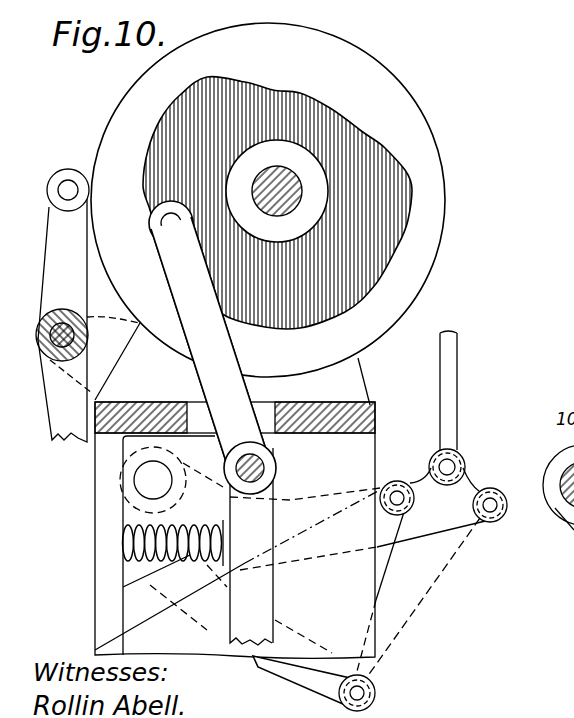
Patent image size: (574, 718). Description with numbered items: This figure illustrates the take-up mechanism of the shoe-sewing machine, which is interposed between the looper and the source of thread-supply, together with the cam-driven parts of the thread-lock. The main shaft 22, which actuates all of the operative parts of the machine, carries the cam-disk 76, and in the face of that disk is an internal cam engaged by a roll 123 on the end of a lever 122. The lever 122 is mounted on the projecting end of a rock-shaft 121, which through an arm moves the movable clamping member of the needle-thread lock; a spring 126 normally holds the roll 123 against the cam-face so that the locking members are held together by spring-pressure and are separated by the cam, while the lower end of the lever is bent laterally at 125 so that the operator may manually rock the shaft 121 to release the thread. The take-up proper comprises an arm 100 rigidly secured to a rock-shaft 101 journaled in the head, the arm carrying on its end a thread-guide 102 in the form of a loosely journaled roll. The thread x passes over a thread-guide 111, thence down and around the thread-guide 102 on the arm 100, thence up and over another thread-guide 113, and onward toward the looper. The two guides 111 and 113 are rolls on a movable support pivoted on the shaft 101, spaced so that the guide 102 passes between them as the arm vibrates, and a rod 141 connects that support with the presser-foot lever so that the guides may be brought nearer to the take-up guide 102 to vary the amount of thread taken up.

The cam-disk 76 is at (412, 128).
The main shaft 22 is at (284, 191).
The roll 123 is at (155, 222).
The lever 122 is at (237, 400).
The rock-shaft 121 is at (263, 467).
The rock-shaft 101 is at (148, 480).
The spring 126 is at (180, 553).
The laterally bent lower end of lever 125 is at (253, 592).
The rod 141 is at (447, 405).
The thread-guide 111 is at (400, 487).
The thread-guide 113 is at (497, 493).
The thread x is at (423, 612).
The arm 100 is at (290, 673).
The thread-guide 102 is at (375, 695).